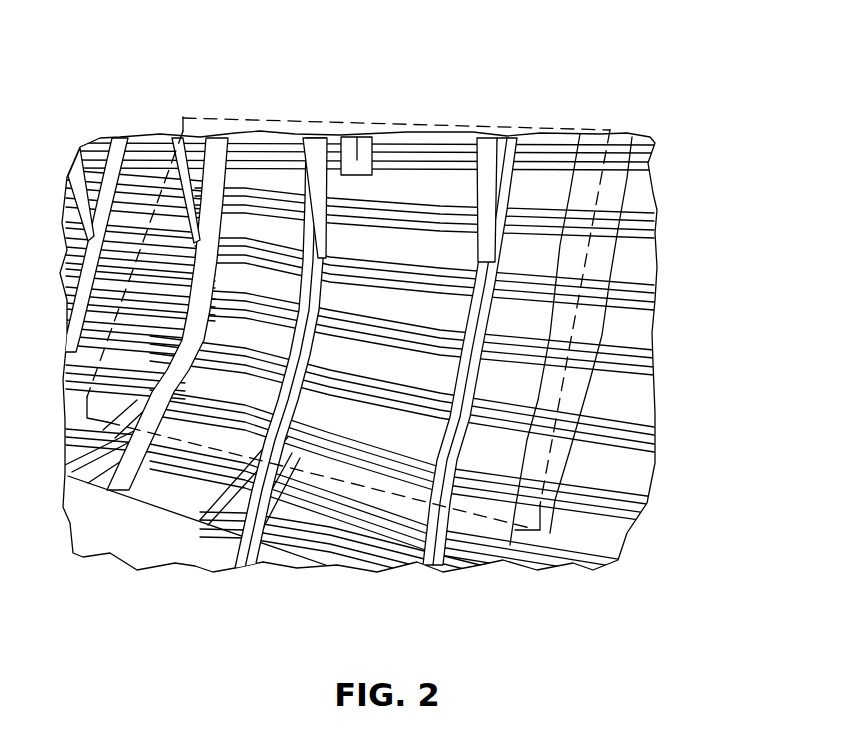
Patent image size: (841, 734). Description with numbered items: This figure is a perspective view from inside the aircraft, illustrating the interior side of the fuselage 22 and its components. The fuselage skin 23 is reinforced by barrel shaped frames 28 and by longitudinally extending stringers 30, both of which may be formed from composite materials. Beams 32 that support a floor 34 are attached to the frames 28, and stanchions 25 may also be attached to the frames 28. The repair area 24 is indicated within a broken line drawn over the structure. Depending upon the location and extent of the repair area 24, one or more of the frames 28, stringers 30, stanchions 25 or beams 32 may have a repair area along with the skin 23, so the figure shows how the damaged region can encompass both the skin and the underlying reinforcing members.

The fuselage 22 is at (668, 130).
The fuselage skin 23 is at (632, 328).
The repair area 24 is at (280, 117).
The stanchions 25 is at (303, 128).
The frames 28 is at (366, 131).
The stringers 30 is at (398, 268).
The beams 32 is at (212, 523).
The floor 34 is at (93, 527).